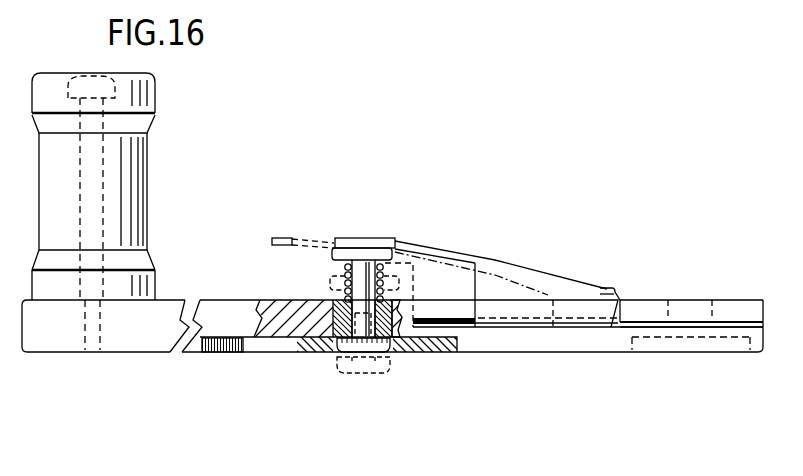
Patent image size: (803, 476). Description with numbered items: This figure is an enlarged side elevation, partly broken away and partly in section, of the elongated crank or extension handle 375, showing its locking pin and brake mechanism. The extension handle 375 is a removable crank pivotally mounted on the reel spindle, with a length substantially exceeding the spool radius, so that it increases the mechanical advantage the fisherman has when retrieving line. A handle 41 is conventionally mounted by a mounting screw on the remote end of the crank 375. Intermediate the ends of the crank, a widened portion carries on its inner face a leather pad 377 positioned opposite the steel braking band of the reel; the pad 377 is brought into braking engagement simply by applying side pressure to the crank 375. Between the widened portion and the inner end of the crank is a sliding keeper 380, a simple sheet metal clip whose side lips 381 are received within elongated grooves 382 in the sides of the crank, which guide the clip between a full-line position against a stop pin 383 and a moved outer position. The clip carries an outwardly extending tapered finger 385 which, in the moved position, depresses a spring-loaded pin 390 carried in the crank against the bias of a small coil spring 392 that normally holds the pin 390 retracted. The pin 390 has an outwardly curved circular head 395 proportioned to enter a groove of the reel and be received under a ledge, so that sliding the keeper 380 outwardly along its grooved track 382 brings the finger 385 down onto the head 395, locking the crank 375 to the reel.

The handle 41 is at (138, 179).
The extension handle 375 is at (147, 337).
The pad 377 is at (432, 353).
The sliding keeper 380 is at (541, 272).
The side lips 381 is at (622, 300).
The elongated grooves 382 is at (697, 325).
The stop pin 383 is at (608, 291).
The finger 385 is at (283, 234).
The spring-loaded pin 390 is at (337, 302).
The coil spring 392 is at (395, 283).
The circular head 395 is at (375, 353).